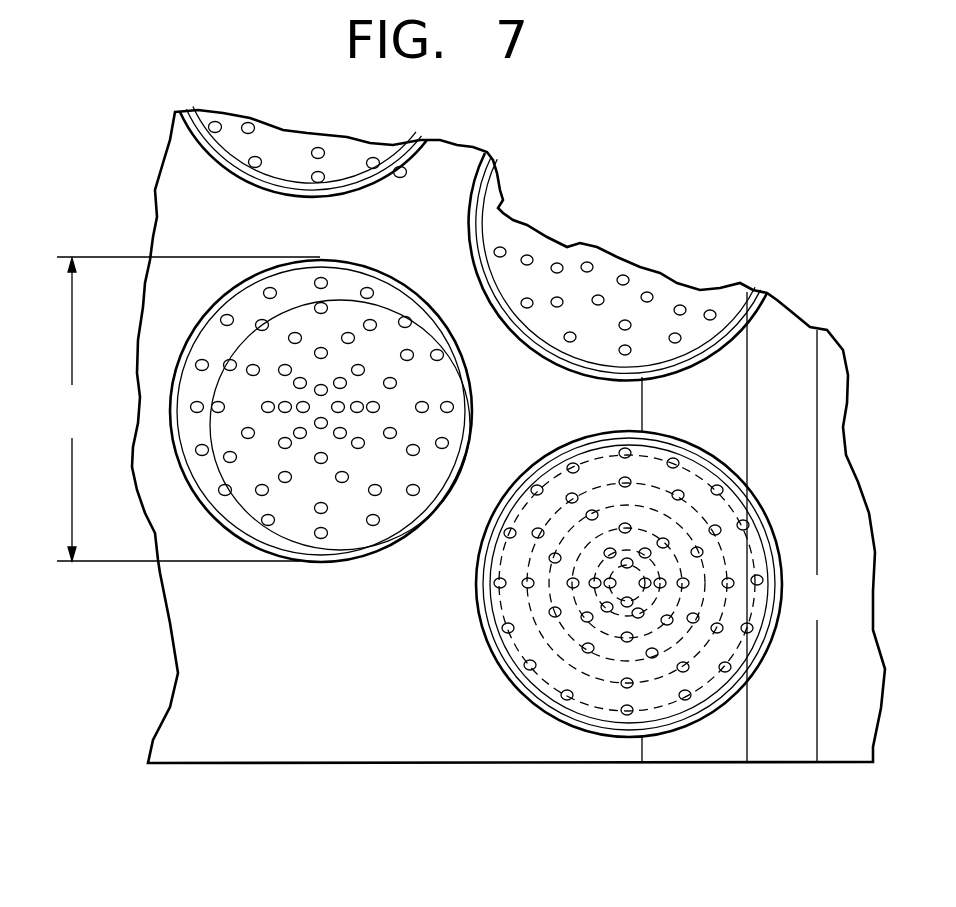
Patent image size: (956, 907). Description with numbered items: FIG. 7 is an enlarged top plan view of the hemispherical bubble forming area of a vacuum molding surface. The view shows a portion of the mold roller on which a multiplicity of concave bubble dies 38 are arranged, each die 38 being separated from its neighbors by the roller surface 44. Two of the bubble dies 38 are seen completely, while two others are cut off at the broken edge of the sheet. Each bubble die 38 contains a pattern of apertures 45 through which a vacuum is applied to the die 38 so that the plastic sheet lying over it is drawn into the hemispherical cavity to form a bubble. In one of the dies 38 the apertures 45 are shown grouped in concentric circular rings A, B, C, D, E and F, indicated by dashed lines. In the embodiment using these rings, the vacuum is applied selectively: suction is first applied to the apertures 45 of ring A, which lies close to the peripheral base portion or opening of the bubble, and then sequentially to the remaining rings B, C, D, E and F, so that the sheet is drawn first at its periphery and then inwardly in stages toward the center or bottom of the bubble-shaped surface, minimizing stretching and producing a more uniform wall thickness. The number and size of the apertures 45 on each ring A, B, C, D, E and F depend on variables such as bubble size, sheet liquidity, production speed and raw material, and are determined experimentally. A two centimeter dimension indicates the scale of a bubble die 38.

The concave bubble die 38 is at (407, 168).
The roller surface 44 is at (540, 412).
The apertures 45 is at (255, 167).
The ring A is at (700, 697).
The ring B is at (750, 678).
The ring C is at (772, 643).
The ring D is at (782, 578).
The ring E is at (765, 547).
The ring F is at (745, 503).